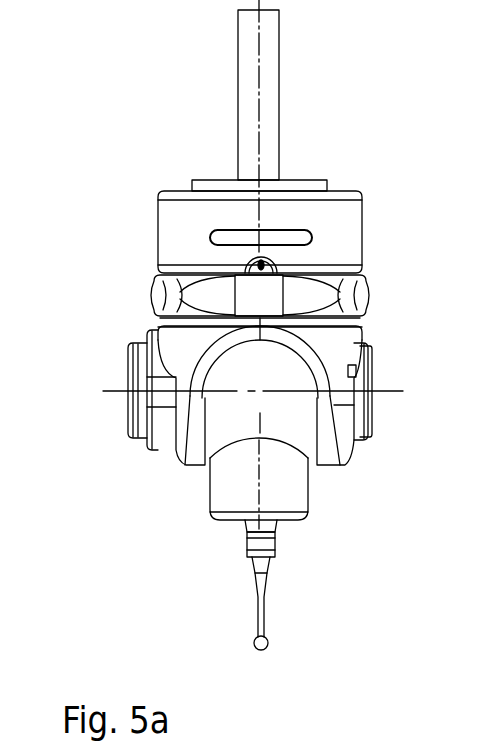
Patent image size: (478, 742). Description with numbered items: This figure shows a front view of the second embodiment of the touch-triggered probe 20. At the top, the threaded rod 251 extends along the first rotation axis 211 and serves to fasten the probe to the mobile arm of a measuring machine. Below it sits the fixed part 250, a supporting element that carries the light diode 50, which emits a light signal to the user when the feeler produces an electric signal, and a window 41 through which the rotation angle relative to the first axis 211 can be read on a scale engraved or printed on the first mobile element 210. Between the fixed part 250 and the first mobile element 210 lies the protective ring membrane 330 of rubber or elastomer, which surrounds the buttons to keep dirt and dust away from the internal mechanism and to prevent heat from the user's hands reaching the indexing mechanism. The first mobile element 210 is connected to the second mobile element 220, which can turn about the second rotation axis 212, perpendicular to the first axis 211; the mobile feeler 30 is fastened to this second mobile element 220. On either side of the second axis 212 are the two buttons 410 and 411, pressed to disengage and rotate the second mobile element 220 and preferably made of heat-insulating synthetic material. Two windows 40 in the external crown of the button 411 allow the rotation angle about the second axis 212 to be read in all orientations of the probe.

The touch-triggered probe 20 is at (362, 158).
The threaded rod 251 is at (273, 53).
The first rotation axis 211 is at (258, 108).
The fixed part 250 is at (340, 222).
The light diode 50 is at (210, 232).
The window 41 is at (246, 265).
The protective ring membrane 330 is at (368, 290).
The first mobile element 210 is at (345, 337).
The second rotation axis 212 is at (113, 391).
The button 410 is at (127, 420).
The windows 40 is at (365, 372).
The button 411 is at (372, 416).
The second mobile element 220 is at (240, 428).
The mobile feeler 30 is at (197, 606).